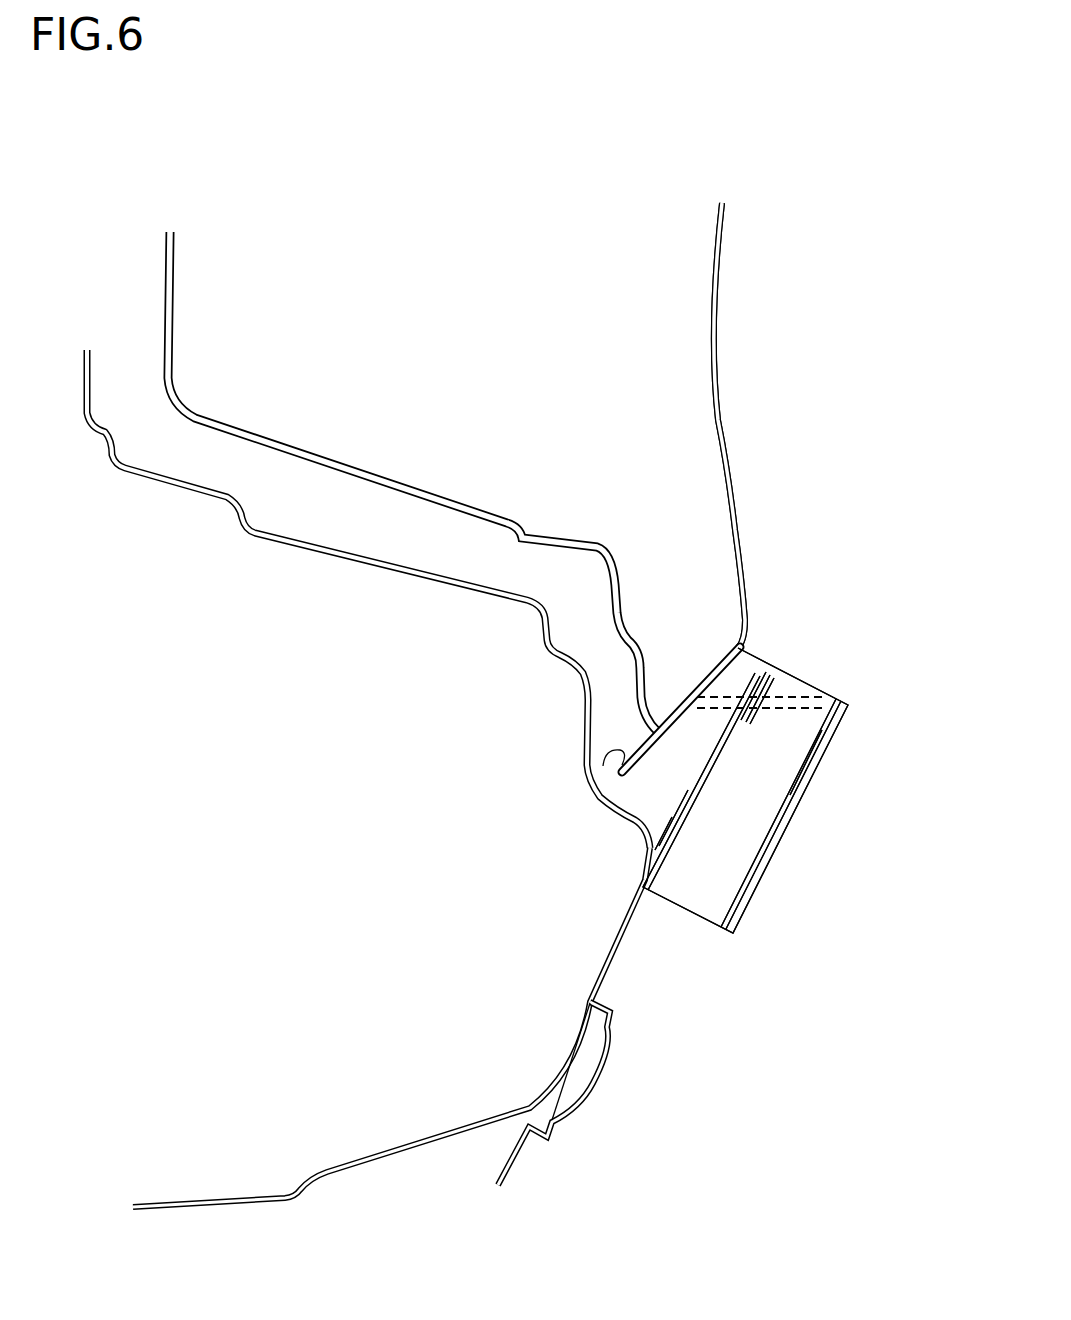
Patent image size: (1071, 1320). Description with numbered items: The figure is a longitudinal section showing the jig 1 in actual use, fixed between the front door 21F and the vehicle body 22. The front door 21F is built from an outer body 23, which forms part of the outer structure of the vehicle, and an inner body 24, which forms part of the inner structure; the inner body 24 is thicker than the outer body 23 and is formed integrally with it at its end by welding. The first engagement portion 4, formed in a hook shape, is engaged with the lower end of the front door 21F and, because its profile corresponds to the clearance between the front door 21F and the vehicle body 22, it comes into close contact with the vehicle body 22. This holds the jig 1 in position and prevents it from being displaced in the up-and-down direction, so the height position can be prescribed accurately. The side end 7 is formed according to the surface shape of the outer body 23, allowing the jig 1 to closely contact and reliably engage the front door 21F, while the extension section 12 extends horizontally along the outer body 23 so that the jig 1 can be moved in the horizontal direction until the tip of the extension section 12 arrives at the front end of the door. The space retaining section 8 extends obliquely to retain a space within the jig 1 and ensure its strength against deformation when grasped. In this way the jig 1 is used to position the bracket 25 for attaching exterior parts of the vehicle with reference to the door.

The jig 1 is at (820, 805).
The first engagement portion 4 is at (607, 762).
The side end 7 is at (680, 708).
The space retaining section 8 is at (793, 698).
The extension section 12 is at (722, 675).
The front door 21F is at (772, 298).
The vehicle body 22 is at (378, 558).
The outer body 23 is at (727, 455).
The inner body 24 is at (297, 450).
The bracket 25 is at (615, 957).